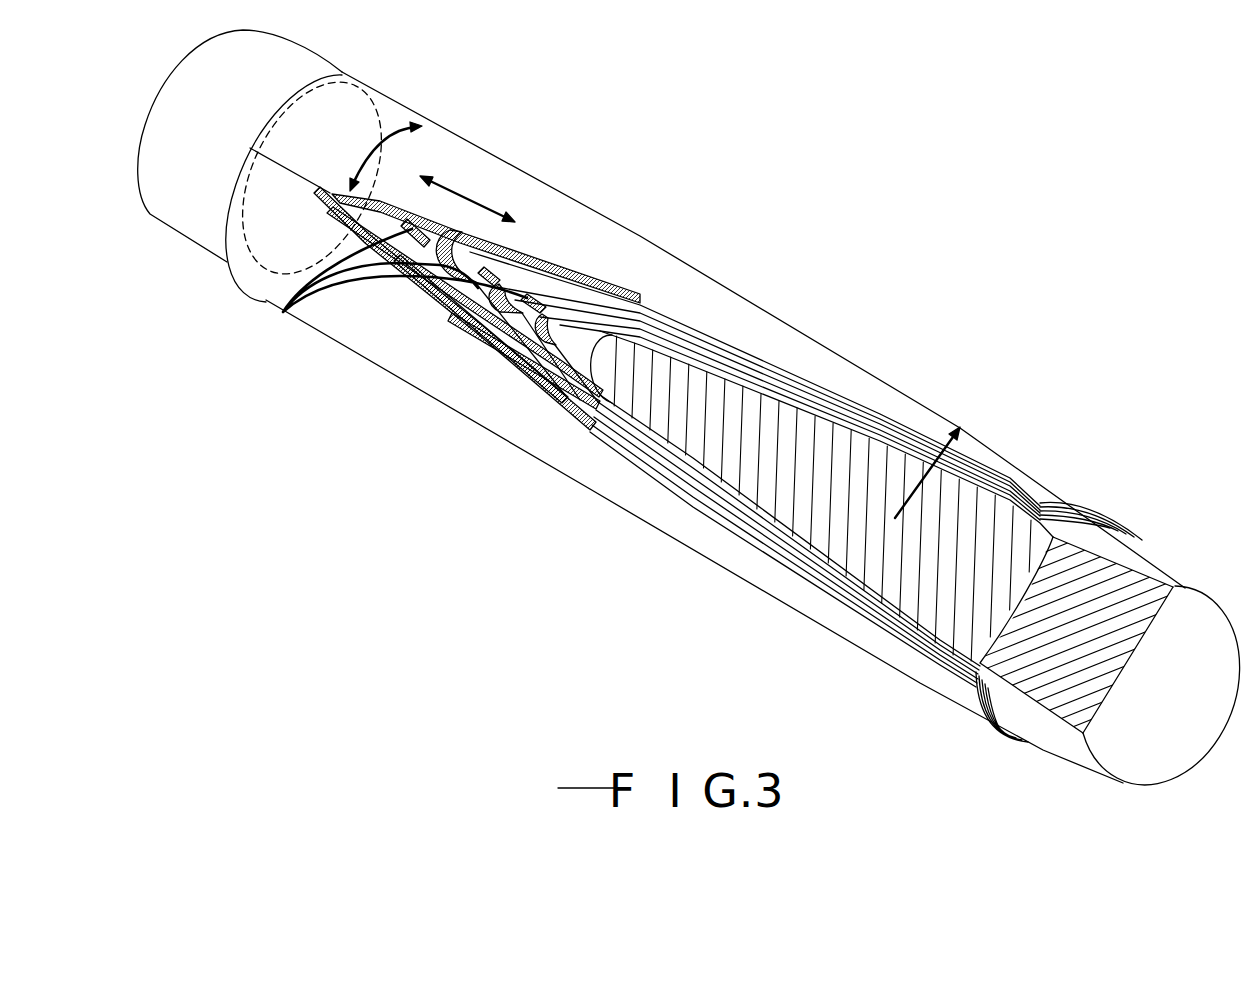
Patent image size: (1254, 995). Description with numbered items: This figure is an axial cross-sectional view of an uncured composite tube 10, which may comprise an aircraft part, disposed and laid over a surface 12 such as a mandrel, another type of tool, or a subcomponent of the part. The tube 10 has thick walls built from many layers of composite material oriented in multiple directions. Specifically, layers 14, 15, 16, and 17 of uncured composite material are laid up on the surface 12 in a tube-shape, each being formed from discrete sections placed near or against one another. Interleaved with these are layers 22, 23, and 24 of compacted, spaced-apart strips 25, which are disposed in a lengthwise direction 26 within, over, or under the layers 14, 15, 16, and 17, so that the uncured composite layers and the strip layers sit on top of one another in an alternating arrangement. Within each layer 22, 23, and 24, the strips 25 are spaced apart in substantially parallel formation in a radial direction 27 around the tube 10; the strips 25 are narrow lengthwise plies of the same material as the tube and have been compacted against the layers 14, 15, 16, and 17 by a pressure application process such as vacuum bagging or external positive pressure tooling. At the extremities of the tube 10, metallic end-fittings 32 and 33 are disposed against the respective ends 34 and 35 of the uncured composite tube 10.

The uncured composite tube 10 is at (921, 298).
The surface 12 is at (897, 570).
The layer of uncured composite material 14 is at (767, 377).
The layer of uncured composite material 15 is at (720, 350).
The layer of uncured composite material 16 is at (653, 315).
The layer of uncured composite material 17 is at (542, 257).
The layer of compacted, spaced-apart strips 22 is at (652, 312).
The layer of compacted, spaced-apart strips 23 is at (597, 300).
The layer of compacted, spaced-apart strips 24 is at (527, 257).
The strips 25 is at (550, 250).
The lengthwise direction 26 is at (467, 197).
The radial direction 27 is at (380, 130).
The metallic end-fitting 32 is at (1057, 730).
The metallic end-fitting 33 is at (190, 217).
The end of the uncured composite tube 34 is at (1138, 543).
The end of the uncured composite tube 35 is at (342, 73).